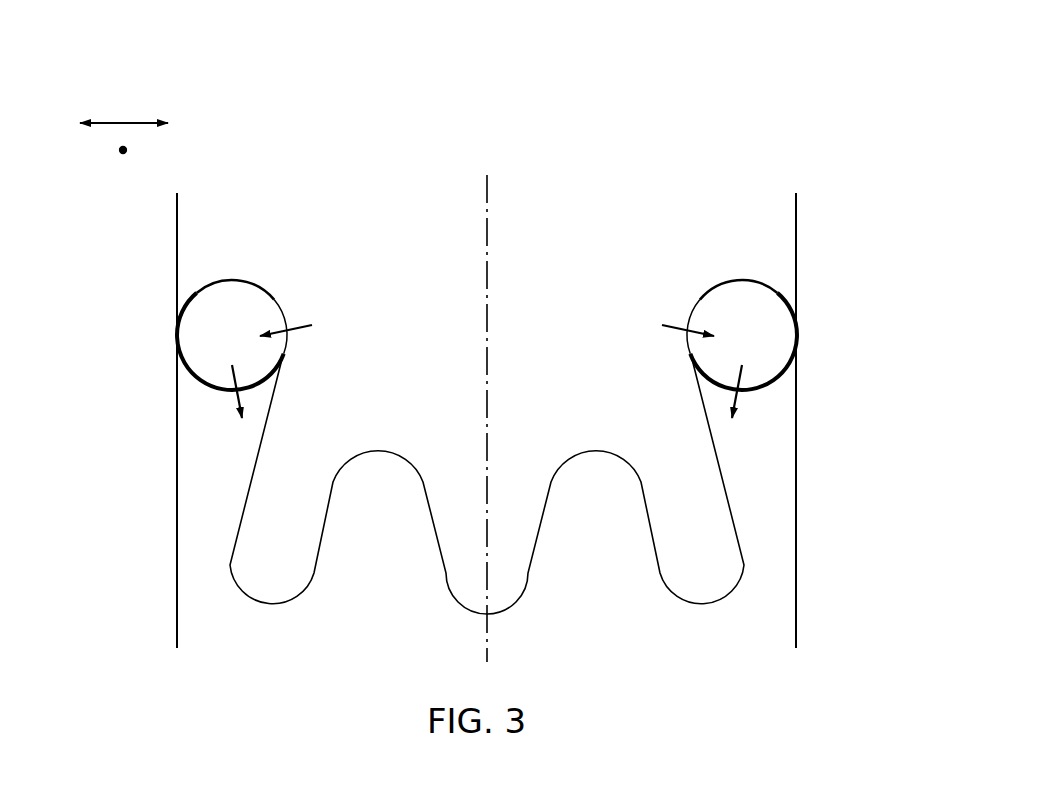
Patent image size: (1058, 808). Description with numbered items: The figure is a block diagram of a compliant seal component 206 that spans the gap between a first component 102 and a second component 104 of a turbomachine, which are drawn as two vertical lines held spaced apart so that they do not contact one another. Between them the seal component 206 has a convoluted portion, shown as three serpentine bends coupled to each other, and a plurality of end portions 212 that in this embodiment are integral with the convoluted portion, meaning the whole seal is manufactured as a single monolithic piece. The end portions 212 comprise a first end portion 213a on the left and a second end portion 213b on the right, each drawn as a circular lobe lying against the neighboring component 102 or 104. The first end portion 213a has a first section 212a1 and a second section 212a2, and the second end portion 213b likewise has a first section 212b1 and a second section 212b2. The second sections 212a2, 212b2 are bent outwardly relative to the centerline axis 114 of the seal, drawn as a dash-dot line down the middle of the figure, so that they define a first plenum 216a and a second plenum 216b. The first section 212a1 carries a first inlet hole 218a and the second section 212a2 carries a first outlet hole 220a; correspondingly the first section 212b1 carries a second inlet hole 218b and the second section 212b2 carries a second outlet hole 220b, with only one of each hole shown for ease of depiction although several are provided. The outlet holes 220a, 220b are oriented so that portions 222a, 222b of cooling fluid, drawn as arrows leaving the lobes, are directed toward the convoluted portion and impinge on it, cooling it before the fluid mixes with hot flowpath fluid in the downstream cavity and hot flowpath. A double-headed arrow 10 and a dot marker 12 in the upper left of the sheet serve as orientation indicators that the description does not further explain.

The axial direction 10 is at (125, 120).
The circumferential direction 12 is at (128, 151).
The first component 102 is at (177, 480).
The second component 104 is at (797, 480).
The centerline axis 114 is at (487, 246).
The compliant seal component 206 is at (749, 80).
The plurality of end portions 212 is at (252, 304).
The first section of first end portion 212a1 is at (286, 305).
The second section of first end portion 212a2 is at (187, 354).
The first section of second end portion 212b1 is at (692, 305).
The second section of second end portion 212b2 is at (784, 295).
The first end portion 213a is at (207, 283).
The second end portion 213b is at (763, 283).
The first plenum 216a is at (252, 304).
The second plenum 216b is at (718, 292).
The first inlet hole 218a is at (326, 325).
The second inlet hole 218b is at (648, 325).
The first outlet hole 220a is at (233, 398).
The second outlet hole 220b is at (668, 396).
The portion of cooling fluid 222a is at (305, 327).
The portion of cooling fluid 222b is at (686, 327).